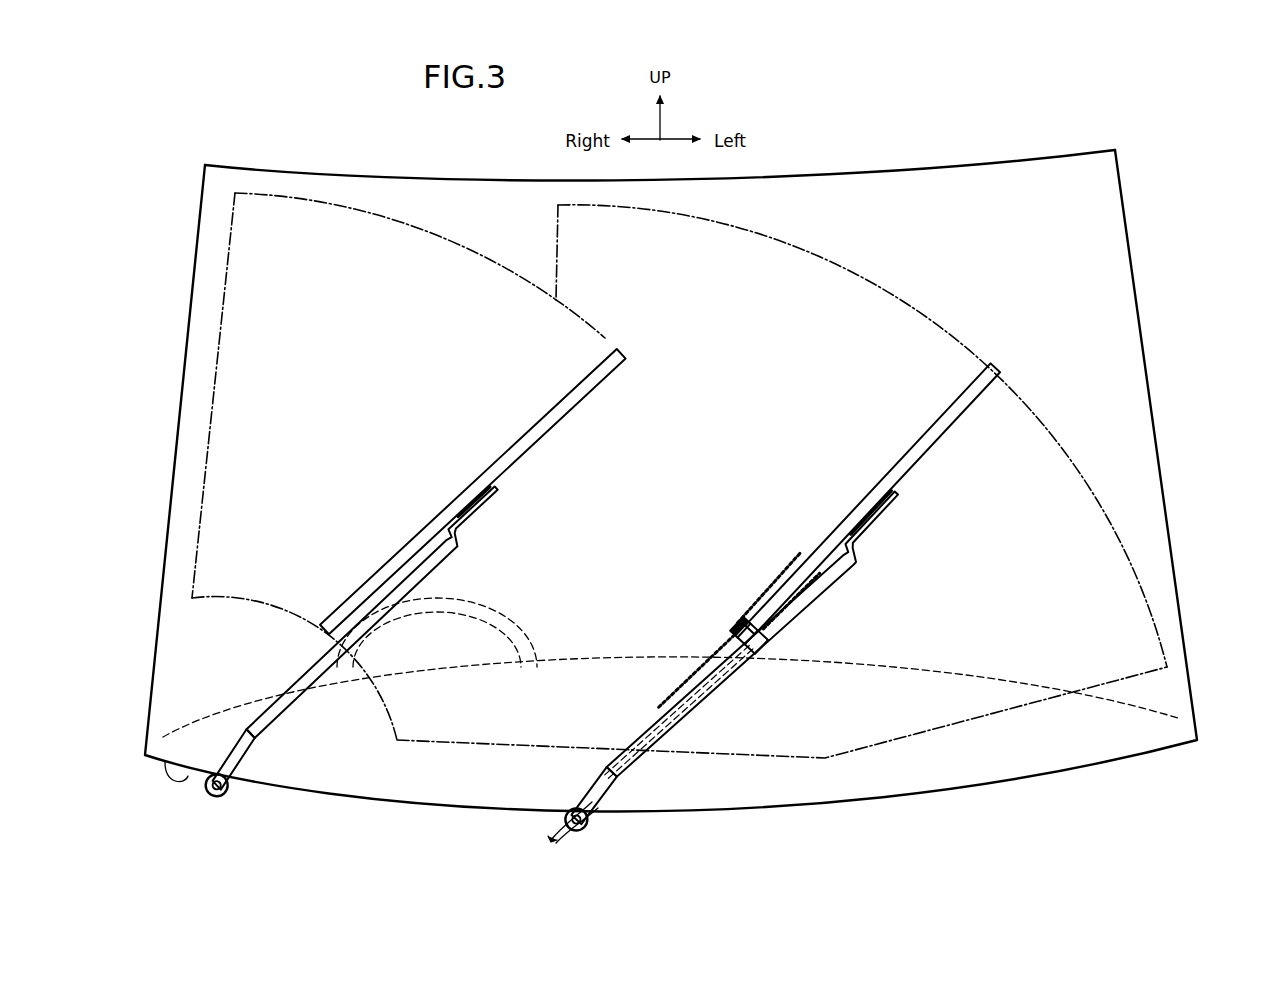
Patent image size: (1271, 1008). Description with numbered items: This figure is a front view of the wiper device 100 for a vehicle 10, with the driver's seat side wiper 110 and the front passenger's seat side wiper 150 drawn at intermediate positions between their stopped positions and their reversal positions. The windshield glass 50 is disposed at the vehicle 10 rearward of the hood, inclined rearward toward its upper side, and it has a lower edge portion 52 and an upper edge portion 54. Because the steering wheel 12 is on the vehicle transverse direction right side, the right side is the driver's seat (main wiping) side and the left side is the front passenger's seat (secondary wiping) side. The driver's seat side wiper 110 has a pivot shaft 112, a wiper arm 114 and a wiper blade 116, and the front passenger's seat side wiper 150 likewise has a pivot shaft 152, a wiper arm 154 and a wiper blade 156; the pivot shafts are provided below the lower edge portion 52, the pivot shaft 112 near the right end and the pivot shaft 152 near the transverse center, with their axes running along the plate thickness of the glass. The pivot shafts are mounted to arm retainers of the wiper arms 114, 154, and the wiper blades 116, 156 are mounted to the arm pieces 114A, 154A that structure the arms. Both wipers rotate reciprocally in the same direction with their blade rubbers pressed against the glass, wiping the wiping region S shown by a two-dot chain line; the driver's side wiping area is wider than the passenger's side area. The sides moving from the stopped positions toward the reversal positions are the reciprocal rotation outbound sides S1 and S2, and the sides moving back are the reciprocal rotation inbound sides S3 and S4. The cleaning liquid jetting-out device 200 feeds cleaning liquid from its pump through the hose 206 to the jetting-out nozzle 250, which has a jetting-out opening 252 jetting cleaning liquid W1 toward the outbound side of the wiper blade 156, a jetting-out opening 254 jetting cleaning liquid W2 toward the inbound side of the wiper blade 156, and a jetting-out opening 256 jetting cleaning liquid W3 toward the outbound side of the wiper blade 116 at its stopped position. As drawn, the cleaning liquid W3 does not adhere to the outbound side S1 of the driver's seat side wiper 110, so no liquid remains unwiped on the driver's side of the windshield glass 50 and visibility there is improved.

The vehicle 10 is at (1214, 139).
The steering wheel 12 is at (483, 592).
The windshield glass 50 is at (980, 176).
The lower edge portion 52 is at (190, 767).
The upper edge portion 54 is at (933, 163).
The wiping region S is at (679, 475).
The reciprocal rotation outbound side S1 is at (371, 373).
The reciprocal rotation outbound side S2 is at (783, 373).
The reciprocal rotation inbound side S3 is at (564, 540).
The reciprocal rotation inbound side S4 is at (976, 560).
The wiper device for a vehicle 100 is at (741, 641).
The driver's seat side wiper 110 is at (416, 607).
The pivot shaft 112 is at (216, 785).
The wiper arm 114 is at (356, 636).
The arm piece 114A is at (473, 501).
The wiper blade 116 is at (473, 491).
The front passenger's seat side wiper 150 is at (783, 627).
The pivot shaft 152 is at (576, 819).
The wiper arm 154 is at (737, 657).
The arm piece 154A is at (871, 512).
The wiper blade 156 is at (872, 498).
The cleaning liquid jetting-out device 200 is at (680, 711).
The hose 206 is at (680, 711).
The jetting-out nozzle 250 is at (749, 635).
The jetting-out opening 252 is at (744, 631).
The jetting-out opening 254 is at (751, 637).
The jetting-out opening 256 is at (740, 626).
The cleaning liquid W1 is at (769, 587).
The cleaning liquid W2 is at (791, 601).
The cleaning liquid W3 is at (696, 671).